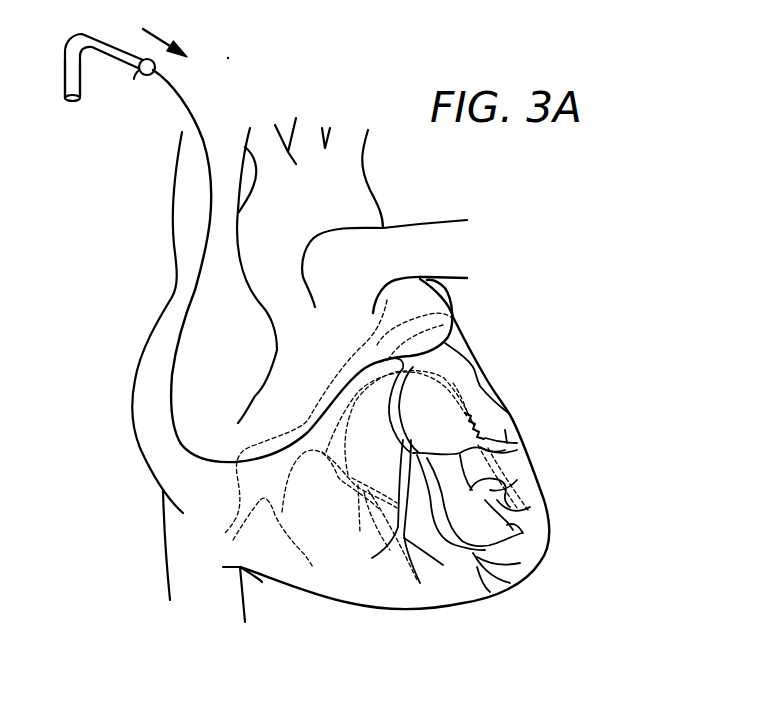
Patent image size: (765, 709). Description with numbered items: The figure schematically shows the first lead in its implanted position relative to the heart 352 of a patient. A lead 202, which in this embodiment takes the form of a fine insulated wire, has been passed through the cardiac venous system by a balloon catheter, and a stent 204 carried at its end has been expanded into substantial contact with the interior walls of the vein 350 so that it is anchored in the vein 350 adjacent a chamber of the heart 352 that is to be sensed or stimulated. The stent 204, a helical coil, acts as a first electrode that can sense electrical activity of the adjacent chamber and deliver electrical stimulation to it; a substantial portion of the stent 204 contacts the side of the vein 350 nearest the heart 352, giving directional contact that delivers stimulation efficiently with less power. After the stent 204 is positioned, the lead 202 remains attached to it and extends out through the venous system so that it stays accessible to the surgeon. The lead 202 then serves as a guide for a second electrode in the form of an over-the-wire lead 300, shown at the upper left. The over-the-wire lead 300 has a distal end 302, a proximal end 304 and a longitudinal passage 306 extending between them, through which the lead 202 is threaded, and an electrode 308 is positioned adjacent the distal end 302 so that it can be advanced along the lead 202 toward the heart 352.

The over-the-wire lead 300 is at (90, 33).
The distal end 302 is at (155, 65).
The proximal end 304 is at (90, 88).
The longitudinal passage 306 is at (72, 103).
The electrode 308 is at (137, 72).
The lead 202 is at (208, 233).
The stent 204 is at (480, 424).
The vein 350 is at (453, 383).
The heart 352 is at (547, 536).